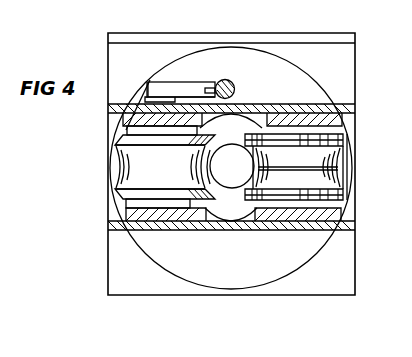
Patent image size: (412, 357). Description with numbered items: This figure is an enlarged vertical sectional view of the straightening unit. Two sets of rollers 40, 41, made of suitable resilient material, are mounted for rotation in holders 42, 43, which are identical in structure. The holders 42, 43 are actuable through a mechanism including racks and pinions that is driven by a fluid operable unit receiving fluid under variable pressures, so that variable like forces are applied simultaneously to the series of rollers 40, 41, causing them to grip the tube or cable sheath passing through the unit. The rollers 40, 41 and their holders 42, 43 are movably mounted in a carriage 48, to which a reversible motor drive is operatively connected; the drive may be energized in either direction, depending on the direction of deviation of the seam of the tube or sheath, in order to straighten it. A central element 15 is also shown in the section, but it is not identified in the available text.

The central shaft 15 is at (234, 190).
The rollers 40 is at (123, 166).
The rollers 41 is at (338, 185).
The holder 42 is at (134, 133).
The holder 43 is at (312, 120).
The carriage 48 is at (249, 108).